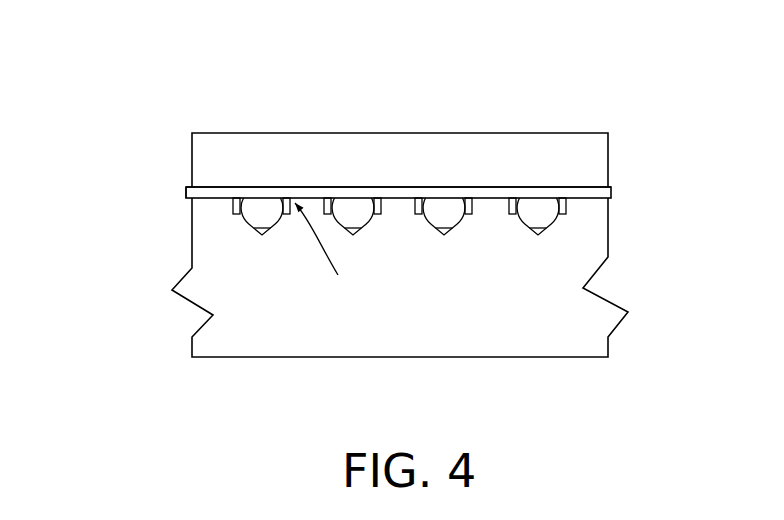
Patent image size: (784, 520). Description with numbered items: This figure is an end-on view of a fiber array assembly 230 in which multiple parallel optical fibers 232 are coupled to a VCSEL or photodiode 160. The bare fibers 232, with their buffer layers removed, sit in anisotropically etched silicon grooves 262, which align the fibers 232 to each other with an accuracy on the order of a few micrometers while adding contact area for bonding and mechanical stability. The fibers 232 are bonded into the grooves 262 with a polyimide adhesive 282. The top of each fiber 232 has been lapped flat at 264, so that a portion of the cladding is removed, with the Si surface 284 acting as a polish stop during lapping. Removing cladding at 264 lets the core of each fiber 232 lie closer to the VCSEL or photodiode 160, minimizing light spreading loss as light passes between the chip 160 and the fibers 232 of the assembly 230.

The VCSEL or photodiode 160 is at (587, 142).
The fiber array assembly 230 is at (597, 258).
The fiber 232 is at (262, 205).
The anisotropically etched silicon grooves 262 is at (530, 233).
The lapped top surface of fiber array 264 is at (538, 198).
The polyimide adhesive 282 is at (186, 192).
The Si surface 284 is at (225, 190).